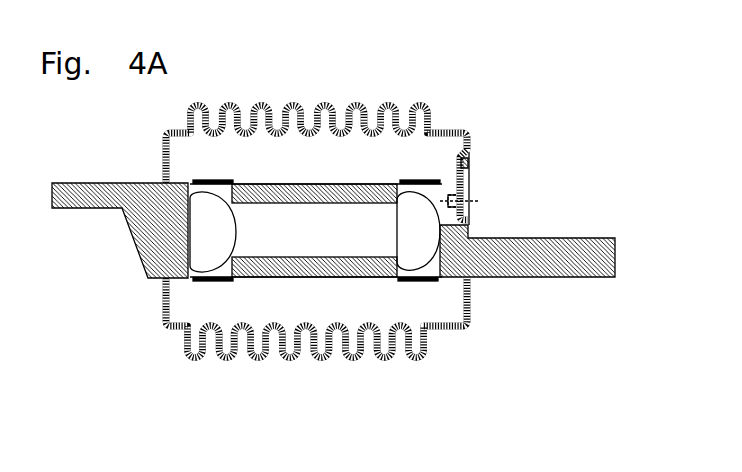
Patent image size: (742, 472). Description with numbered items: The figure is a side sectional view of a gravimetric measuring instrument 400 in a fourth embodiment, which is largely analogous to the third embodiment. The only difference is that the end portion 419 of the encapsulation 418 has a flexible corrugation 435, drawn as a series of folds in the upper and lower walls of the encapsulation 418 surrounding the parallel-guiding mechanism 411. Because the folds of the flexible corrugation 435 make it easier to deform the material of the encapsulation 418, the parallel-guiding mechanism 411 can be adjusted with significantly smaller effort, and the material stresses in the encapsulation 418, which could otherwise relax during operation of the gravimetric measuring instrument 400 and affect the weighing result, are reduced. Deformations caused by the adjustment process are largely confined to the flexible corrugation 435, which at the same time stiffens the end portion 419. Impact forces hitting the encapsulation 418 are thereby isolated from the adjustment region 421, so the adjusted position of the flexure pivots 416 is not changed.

The gravimetric measuring instrument 400 is at (118, 341).
The parallel-guiding mechanism 411 is at (328, 299).
The flexure pivots 416 is at (420, 188).
The encapsulation 418 is at (258, 358).
The end portion 419 is at (468, 140).
The adjustment region 421 is at (488, 195).
The flexible corrugation 435 is at (466, 162).